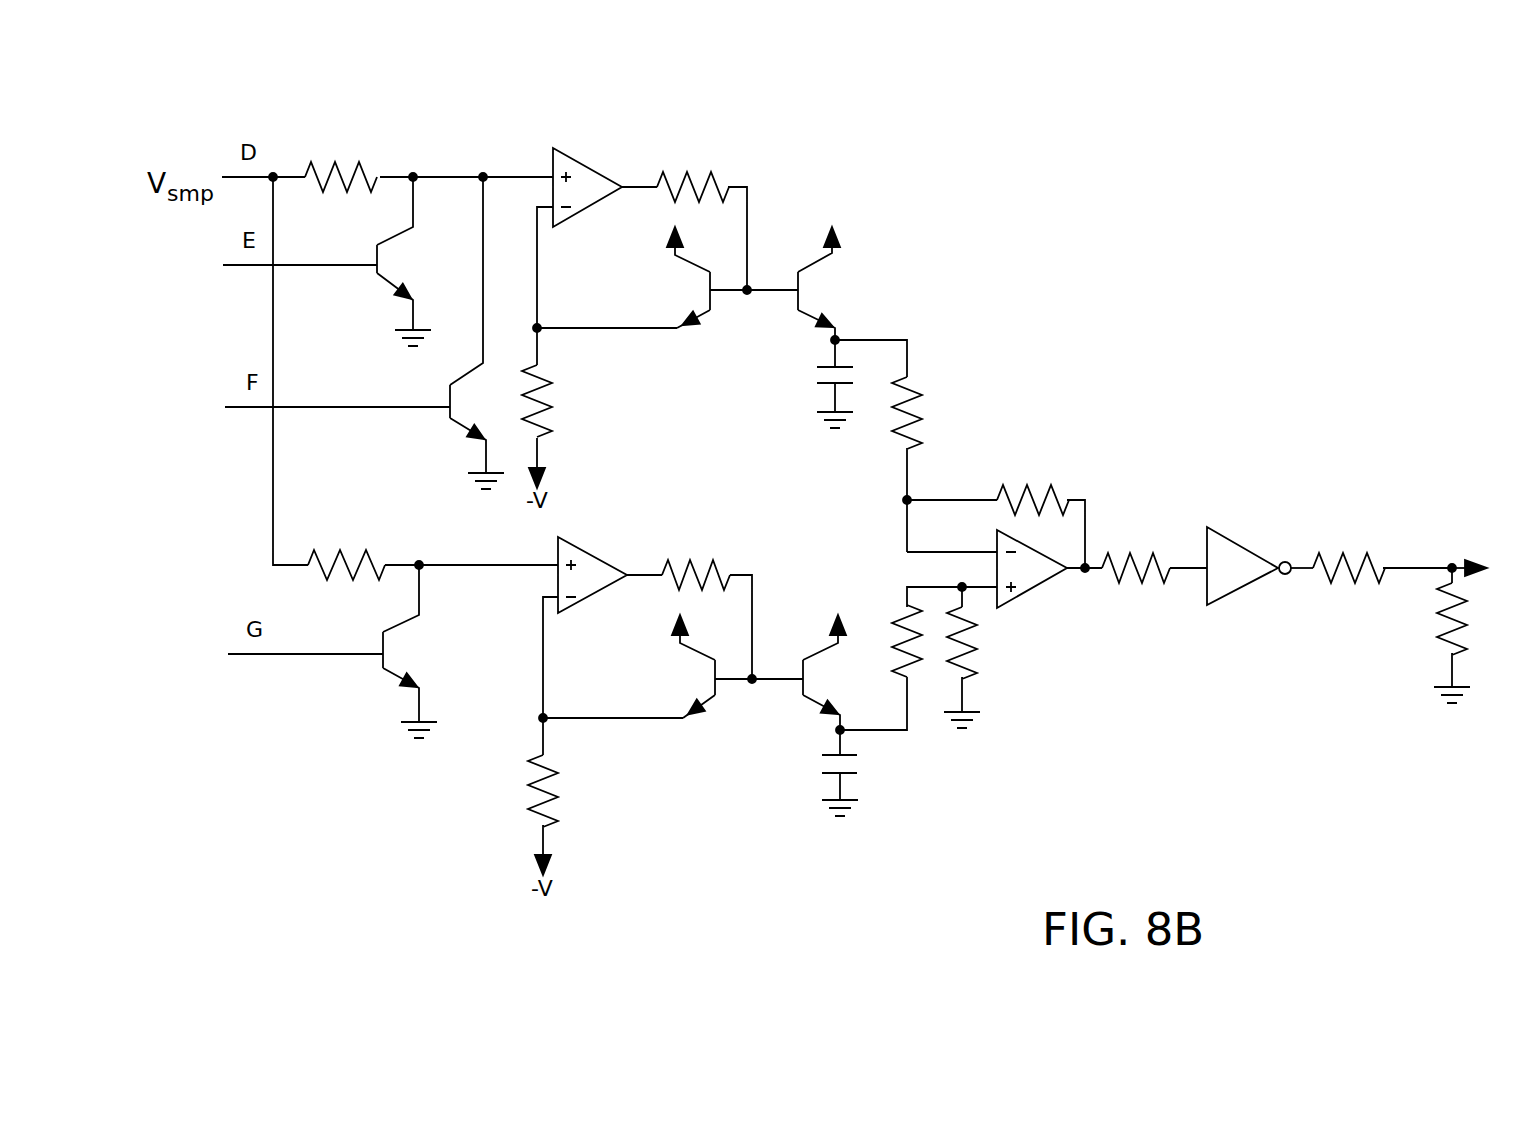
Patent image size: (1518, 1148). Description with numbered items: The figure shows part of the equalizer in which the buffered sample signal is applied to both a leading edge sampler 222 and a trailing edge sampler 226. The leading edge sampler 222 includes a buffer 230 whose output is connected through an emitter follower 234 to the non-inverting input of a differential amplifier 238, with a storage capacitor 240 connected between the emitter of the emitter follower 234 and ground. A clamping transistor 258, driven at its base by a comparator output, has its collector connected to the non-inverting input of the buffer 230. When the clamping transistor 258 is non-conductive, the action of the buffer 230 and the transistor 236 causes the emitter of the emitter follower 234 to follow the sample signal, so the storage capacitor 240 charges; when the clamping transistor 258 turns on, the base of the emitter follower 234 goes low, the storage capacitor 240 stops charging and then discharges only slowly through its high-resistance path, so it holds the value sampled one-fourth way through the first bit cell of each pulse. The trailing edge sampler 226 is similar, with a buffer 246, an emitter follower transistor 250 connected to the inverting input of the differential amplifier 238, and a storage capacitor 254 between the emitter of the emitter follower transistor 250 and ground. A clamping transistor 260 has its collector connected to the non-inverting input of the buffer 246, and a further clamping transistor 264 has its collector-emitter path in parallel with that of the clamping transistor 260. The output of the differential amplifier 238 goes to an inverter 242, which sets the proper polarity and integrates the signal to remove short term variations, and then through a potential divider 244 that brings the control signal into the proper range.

The leading edge sampler 222 is at (762, 660).
The trailing edge sampler 226 is at (722, 327).
The buffer 230 is at (595, 558).
The emitter follower 234 is at (810, 697).
The transistor 236 is at (710, 695).
The differential amplifier 238 is at (1037, 587).
The storage capacitor 240 is at (862, 763).
The inverter 242 is at (1247, 583).
The potential divider 244 is at (1456, 530).
The buffer 246 is at (592, 167).
The emitter follower transistor 250 is at (805, 305).
The storage capacitor 254 is at (817, 378).
The clamping transistor 258 is at (390, 668).
The clamping transistor 260 is at (383, 275).
The further clamping transistor 264 is at (455, 418).